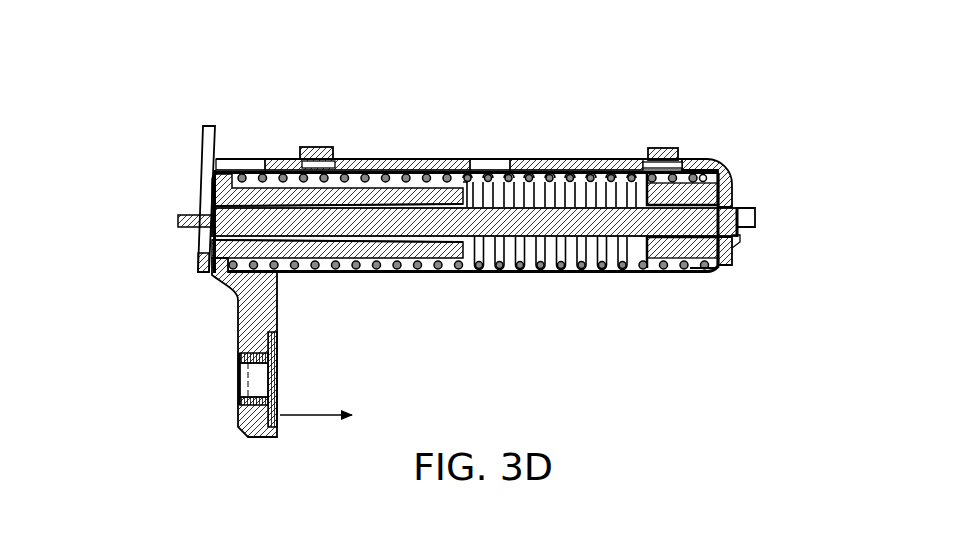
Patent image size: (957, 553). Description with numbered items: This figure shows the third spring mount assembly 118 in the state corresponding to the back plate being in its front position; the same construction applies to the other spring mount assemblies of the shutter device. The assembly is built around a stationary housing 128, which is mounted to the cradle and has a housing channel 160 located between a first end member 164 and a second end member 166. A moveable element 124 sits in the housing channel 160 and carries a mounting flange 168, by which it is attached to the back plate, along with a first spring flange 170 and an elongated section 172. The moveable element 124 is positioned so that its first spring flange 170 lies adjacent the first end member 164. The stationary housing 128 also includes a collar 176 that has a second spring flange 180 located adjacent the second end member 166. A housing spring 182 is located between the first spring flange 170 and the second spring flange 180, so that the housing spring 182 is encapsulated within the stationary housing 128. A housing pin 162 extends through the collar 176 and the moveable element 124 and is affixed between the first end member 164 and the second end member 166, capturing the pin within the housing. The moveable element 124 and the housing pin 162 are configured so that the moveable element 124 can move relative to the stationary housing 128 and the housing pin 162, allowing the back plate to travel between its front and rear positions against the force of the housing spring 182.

The third spring mount assembly 118 is at (173, 83).
The moveable element 124 is at (358, 170).
The stationary housing 128 is at (555, 167).
The housing channel 160 is at (365, 272).
The housing pin 162 is at (670, 220).
The first end member 164 is at (200, 190).
The second end member 166 is at (727, 187).
The mounting flange 168 is at (242, 328).
The first spring flange 170 is at (240, 172).
The elongated section 172 is at (308, 163).
The collar 176 is at (670, 250).
The second spring flange 180 is at (703, 267).
The housing spring 182 is at (542, 270).